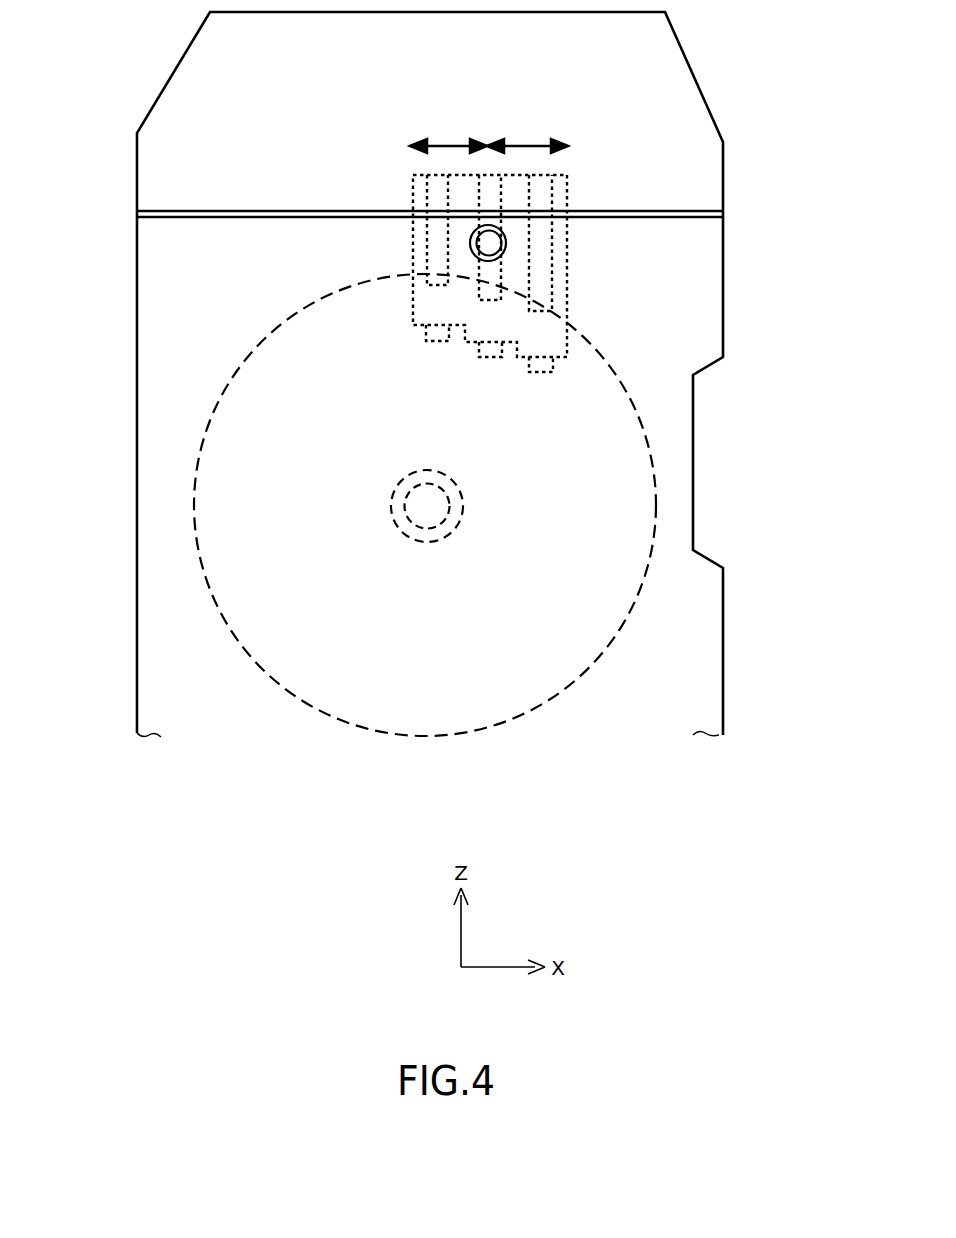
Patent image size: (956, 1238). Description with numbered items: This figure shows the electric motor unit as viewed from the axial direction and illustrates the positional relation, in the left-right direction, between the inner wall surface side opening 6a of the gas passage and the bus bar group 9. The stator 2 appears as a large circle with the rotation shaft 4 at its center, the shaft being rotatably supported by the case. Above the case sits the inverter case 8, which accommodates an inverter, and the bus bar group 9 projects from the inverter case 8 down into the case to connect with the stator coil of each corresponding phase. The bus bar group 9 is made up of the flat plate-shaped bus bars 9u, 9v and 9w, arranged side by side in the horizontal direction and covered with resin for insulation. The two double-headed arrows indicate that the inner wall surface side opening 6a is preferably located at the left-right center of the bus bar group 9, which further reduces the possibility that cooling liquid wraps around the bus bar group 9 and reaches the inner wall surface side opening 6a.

The inverter case 8 is at (653, 115).
The bus bar group 9 is at (567, 192).
The bus bar 9u is at (413, 194).
The bus bar 9v is at (502, 270).
The bus bar 9w is at (553, 295).
The inner wall surface side opening 6a is at (507, 238).
The stator 2 is at (655, 462).
The rotation shaft 4 is at (458, 526).